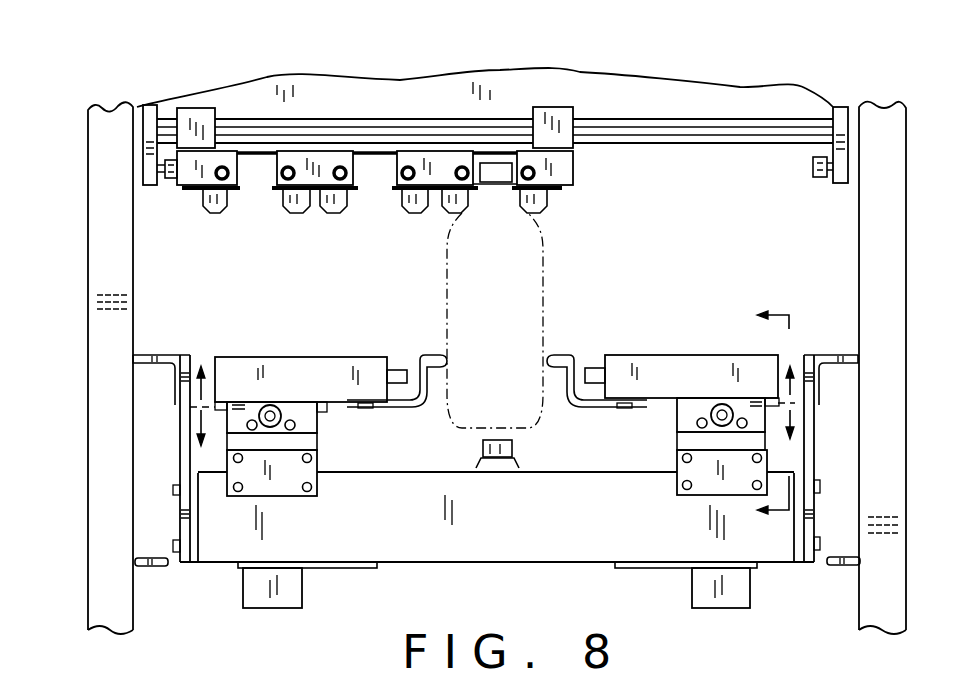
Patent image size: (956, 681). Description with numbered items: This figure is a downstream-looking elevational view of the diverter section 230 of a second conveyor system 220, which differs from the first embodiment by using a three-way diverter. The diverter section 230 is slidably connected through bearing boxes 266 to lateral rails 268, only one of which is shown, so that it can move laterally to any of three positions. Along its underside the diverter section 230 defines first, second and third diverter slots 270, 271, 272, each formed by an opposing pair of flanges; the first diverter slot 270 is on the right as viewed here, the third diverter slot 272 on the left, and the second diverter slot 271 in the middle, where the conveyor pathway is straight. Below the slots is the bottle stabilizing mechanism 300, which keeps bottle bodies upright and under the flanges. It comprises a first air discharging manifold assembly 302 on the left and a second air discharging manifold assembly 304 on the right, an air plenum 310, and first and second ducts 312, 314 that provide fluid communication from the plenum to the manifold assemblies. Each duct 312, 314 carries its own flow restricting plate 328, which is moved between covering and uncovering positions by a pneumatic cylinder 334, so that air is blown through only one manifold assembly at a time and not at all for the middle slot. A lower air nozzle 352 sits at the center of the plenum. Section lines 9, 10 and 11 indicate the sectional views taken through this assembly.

The conveyor system 220 is at (72, 337).
The diverter section 230 is at (313, 240).
The bearing boxes 266 is at (199, 120).
The lateral rails 268 is at (389, 124).
The first diverter slot 270 is at (498, 157).
The second diverter slot 271 is at (373, 167).
The third diverter slot 272 is at (257, 167).
The bottle stabilizing mechanism 300 is at (604, 326).
The first air discharging manifold assembly 302 is at (343, 350).
The second air discharging manifold assembly 304 is at (700, 350).
The air plenum 310 is at (588, 546).
The first duct 312 is at (318, 436).
The second duct 314 is at (677, 439).
The flow restricting plate 328 is at (693, 413).
The pneumatic cylinder 334 is at (278, 480).
The lower air nozzle 352 is at (512, 447).
The section line 9- 9 is at (492, 372).
The section line 10- 10 is at (499, 439).
The section line 11- 11 is at (758, 414).